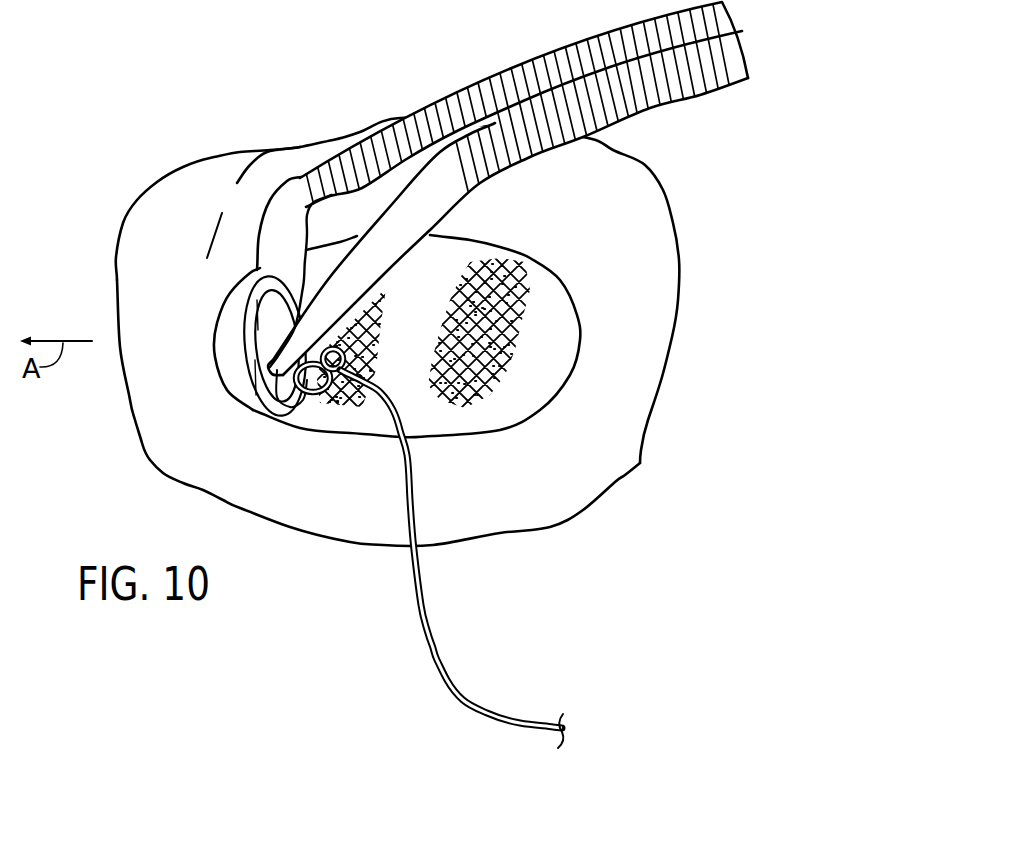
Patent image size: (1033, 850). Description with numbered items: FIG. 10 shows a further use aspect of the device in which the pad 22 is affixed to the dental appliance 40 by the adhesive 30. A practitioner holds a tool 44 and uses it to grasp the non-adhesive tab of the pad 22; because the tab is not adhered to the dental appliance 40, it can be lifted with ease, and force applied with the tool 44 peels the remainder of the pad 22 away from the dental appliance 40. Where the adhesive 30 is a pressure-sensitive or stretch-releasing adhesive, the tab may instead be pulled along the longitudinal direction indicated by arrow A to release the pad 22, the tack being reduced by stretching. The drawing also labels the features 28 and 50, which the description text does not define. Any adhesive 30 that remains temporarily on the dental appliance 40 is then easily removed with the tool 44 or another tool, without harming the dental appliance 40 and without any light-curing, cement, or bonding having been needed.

The pad 22 is at (540, 258).
The mesh patches 28 is at (531, 374).
The adhesive 30 is at (227, 367).
The dental appliance 40 is at (122, 183).
The tool 44 is at (507, 62).
The suture thread 50 is at (438, 660).